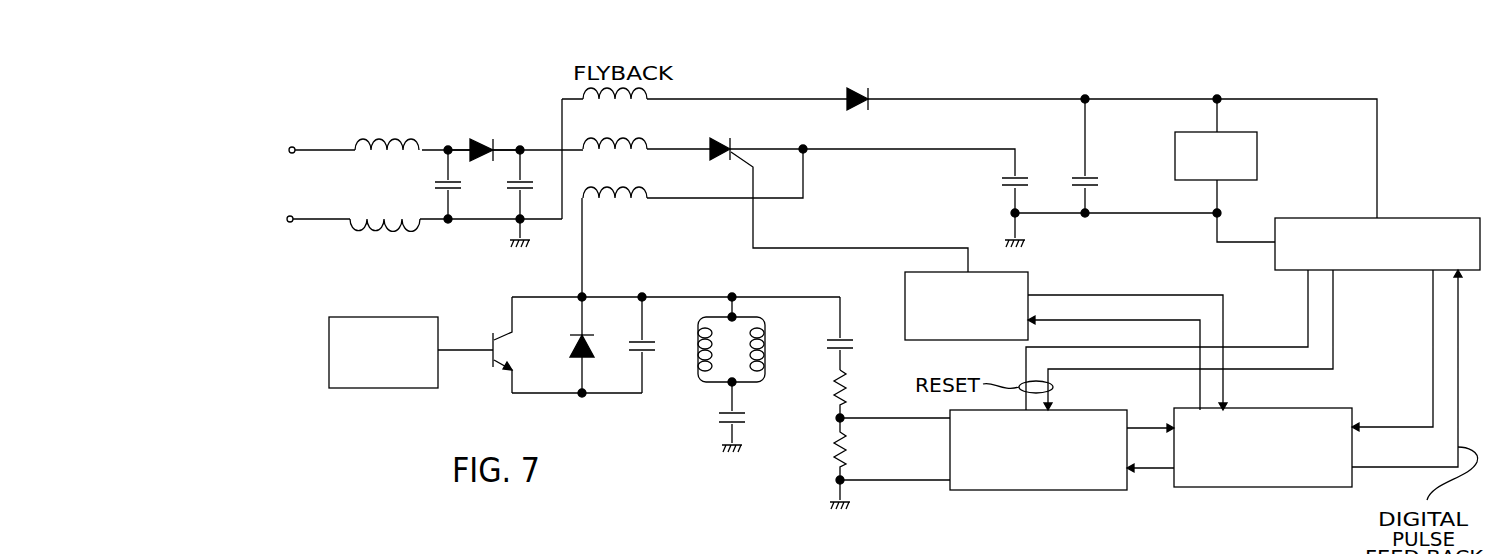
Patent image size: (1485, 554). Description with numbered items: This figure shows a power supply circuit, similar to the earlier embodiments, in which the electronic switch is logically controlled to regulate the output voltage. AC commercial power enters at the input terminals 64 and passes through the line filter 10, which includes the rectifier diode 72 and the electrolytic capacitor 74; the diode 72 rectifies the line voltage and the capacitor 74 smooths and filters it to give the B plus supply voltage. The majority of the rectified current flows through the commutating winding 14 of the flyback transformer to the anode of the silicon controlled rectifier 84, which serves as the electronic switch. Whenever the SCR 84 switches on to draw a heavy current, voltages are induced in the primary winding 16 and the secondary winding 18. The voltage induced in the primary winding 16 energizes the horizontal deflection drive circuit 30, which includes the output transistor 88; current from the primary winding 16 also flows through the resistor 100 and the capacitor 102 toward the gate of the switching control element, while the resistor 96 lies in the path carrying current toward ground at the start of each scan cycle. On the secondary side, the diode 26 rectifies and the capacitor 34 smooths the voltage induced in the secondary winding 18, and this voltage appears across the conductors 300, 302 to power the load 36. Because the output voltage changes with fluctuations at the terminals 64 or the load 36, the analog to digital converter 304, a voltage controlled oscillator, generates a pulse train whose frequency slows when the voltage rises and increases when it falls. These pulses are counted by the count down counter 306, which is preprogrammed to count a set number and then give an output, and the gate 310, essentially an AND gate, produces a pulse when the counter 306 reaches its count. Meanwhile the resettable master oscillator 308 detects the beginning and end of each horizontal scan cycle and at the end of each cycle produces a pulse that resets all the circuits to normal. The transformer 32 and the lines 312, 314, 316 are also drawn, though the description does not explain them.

The input terminals 64 is at (287, 217).
The line filter 10 is at (410, 295).
The rectifier diode 72 is at (477, 140).
The electrolytic capacitor 74 is at (512, 184).
The secondary winding 18 is at (629, 108).
The commutating winding 14 is at (622, 158).
The primary winding 16 is at (633, 207).
The silicon controlled rectifier 84 is at (713, 142).
The diode 26 is at (861, 91).
The conductor 300 is at (1087, 95).
The resistor 96 is at (1000, 181).
The capacitor 34 is at (1090, 177).
The conductor 302 is at (1090, 217).
The load 36 is at (1258, 152).
The analog to digital converter 304 is at (1408, 217).
The gate 310 is at (1028, 274).
The resettable master oscillator 308 is at (1045, 492).
The count down counter 306 is at (1280, 489).
The horizontal deflection drive circuit 30 is at (340, 388).
The output transistor 88 is at (503, 334).
The resonant transformer 32 is at (698, 382).
The capacitor 102 is at (852, 338).
The resistor 100 is at (850, 453).
The signal line (cut off at sheet edge) 312 is at (682, 549).
The signal line (cut off at sheet edge) 314 is at (944, 549).
The signal line (cut off at sheet edge) 316 is at (1164, 549).